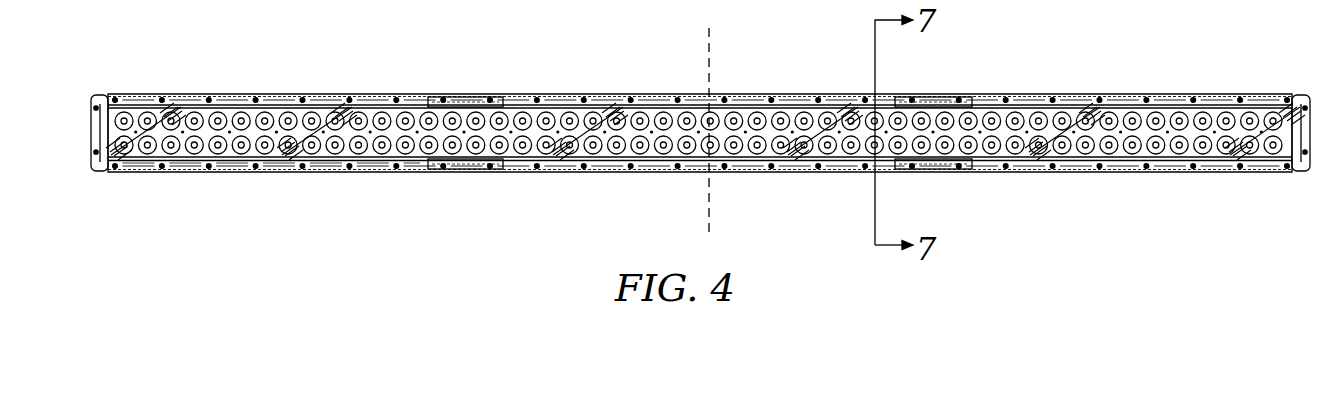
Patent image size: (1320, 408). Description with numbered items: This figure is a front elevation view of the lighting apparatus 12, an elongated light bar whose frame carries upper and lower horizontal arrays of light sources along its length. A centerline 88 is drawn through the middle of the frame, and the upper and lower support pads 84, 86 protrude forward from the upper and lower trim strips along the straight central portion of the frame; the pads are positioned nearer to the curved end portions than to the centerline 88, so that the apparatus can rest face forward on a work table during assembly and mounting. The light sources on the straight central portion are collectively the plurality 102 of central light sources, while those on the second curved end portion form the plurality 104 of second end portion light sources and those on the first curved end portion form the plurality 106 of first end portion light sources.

The lighting apparatus 12 is at (1047, 66).
The upper support pad 84 is at (470, 100).
The lower support pad 86 is at (470, 168).
The centerline 88 is at (711, 36).
The plurality of central light sources 102 is at (812, 165).
The plurality of second end portion light sources 104 is at (192, 168).
The plurality of first end portion light sources 106 is at (1270, 95).